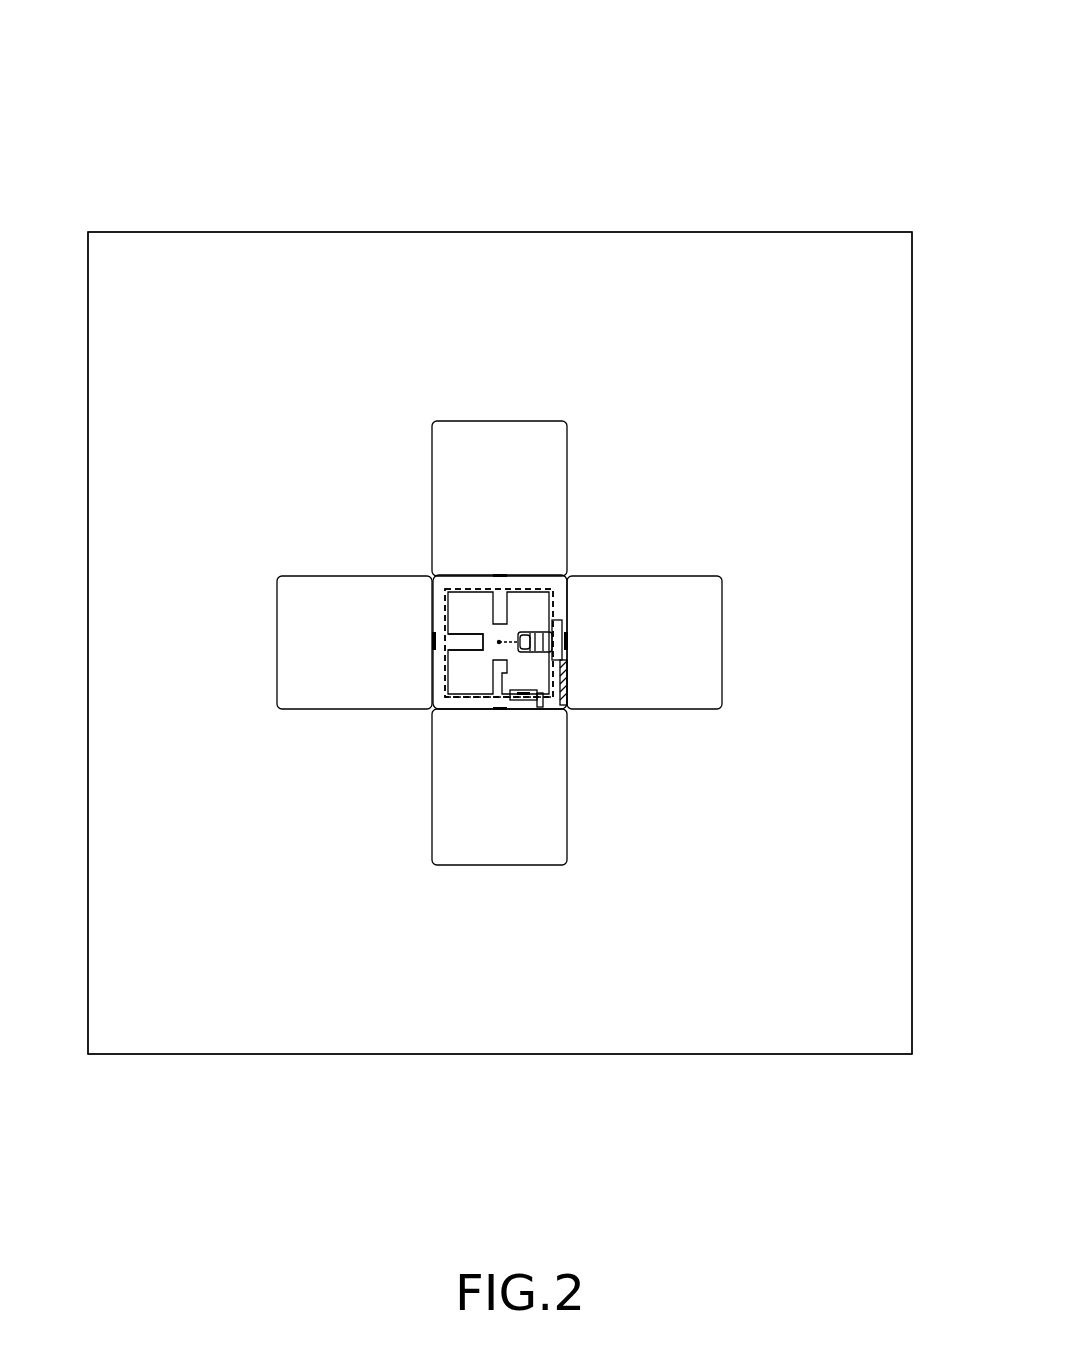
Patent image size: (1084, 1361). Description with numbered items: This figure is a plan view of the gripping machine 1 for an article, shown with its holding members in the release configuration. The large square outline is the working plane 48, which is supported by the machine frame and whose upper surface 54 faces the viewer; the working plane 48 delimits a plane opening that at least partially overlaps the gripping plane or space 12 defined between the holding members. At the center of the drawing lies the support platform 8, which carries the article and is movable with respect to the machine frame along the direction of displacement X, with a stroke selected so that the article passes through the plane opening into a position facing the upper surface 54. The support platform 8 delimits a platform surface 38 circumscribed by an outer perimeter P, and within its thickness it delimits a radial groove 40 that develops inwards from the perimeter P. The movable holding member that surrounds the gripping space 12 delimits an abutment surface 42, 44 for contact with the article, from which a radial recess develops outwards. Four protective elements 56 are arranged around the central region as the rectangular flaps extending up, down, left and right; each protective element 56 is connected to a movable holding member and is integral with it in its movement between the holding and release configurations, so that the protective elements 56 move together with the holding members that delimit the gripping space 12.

The gripping machine 1 is at (554, 117).
The working plane 48 is at (774, 229).
The upper surface 54 is at (330, 1017).
The protective element 56 is at (466, 417).
The support platform 8 is at (434, 599).
The abutment surface 42 is at (468, 584).
The abutment surface 44 is at (499, 643).
The gripping plane or space 12 is at (508, 586).
The radial groove 40 is at (463, 643).
The outer perimeter P is at (461, 698).
The platform surface 38 is at (533, 683).
The direction of displacement X is at (567, 628).